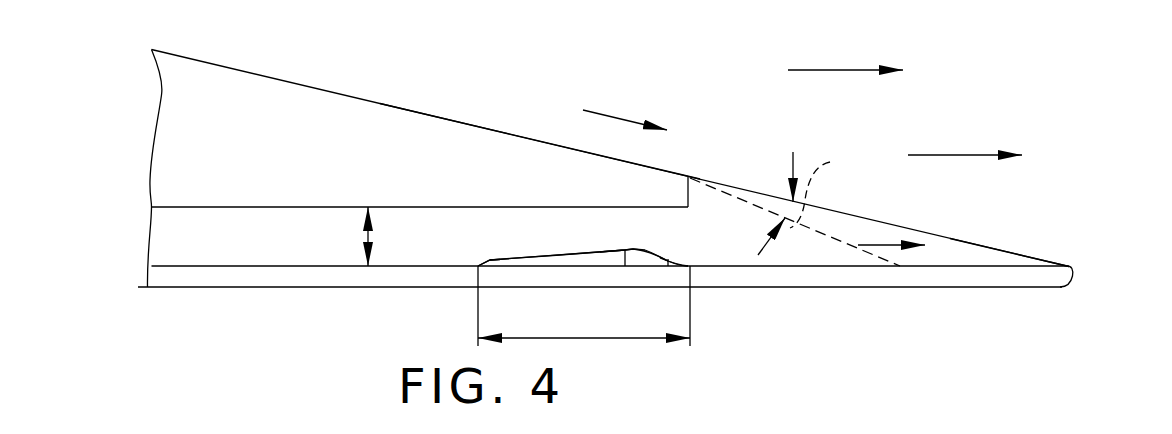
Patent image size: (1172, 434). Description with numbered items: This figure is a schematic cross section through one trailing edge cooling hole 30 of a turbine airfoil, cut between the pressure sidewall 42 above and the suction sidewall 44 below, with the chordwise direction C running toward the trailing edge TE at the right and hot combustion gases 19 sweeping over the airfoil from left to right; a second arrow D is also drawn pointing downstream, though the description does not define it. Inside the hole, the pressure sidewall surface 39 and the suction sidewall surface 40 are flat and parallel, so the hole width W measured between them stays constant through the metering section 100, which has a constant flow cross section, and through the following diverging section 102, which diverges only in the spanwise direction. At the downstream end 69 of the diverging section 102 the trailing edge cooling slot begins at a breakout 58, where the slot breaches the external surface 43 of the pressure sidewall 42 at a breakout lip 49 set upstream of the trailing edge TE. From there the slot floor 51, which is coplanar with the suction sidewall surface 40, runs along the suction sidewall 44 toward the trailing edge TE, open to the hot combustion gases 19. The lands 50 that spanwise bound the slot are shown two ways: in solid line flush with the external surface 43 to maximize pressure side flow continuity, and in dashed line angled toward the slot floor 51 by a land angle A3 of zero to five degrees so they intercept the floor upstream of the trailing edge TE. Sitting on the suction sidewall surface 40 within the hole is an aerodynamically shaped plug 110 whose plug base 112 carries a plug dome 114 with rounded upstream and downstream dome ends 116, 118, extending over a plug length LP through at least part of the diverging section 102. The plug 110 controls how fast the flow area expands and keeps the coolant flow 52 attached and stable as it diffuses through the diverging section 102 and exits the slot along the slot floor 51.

The trailing edge cooling hole 30 is at (197, 252).
The metering section 100 is at (265, 252).
The pressure sidewall 42 is at (368, 125).
The external surface 43 is at (475, 123).
The pressure sidewall surface 39 is at (272, 207).
The hole width W is at (364, 229).
The suction sidewall surface 40 is at (452, 265).
The suction sidewall 44 is at (288, 287).
The diverging section 102 is at (575, 239).
The upstream dome end 116 is at (481, 264).
The plug base 112 is at (557, 268).
The plug dome 114 is at (570, 268).
The plug 110 is at (612, 250).
The downstream end 69 is at (683, 268).
The downstream dome end 118 is at (672, 262).
The plug length LP is at (582, 338).
The breakout 58 is at (692, 173).
The breakout lip 49 is at (692, 188).
The hot combustion gases 19 is at (613, 117).
The land angle A3 is at (793, 152).
The lands 50 is at (830, 208).
The coolant flow 52 is at (877, 248).
The slot floor 51 is at (1002, 267).
The trailing edge TE is at (1073, 280).
The chordwise direction C is at (832, 68).
The downstream direction D is at (952, 153).